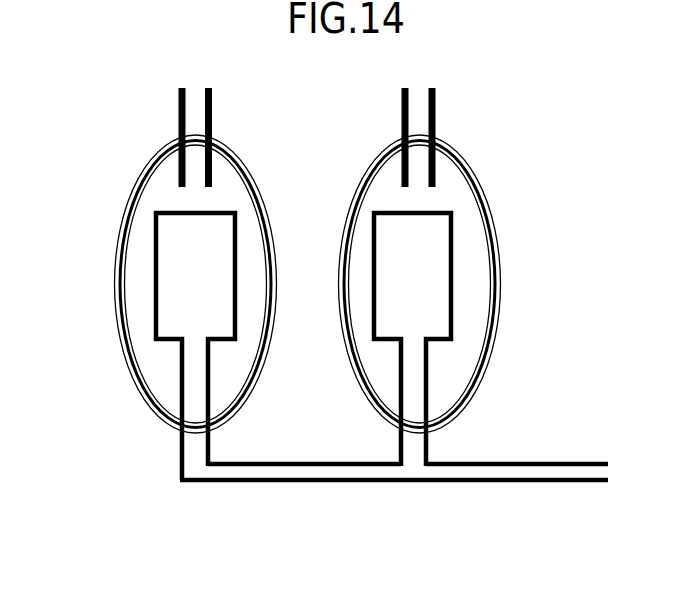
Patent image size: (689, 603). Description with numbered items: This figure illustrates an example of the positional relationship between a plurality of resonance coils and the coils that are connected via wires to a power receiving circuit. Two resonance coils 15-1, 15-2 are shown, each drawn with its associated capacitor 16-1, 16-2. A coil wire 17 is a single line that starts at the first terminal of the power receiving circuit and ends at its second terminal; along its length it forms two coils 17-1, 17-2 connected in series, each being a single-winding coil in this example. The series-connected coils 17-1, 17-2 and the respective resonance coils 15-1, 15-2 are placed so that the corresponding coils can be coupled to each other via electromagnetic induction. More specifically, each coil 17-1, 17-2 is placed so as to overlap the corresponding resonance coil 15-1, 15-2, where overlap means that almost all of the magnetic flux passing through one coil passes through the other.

The resonance coil 15-1 is at (255, 177).
The resonance coil 15-2 is at (479, 177).
The capacitor 16-1 is at (212, 112).
The capacitor 16-2 is at (436, 112).
The coil 17-1 is at (155, 322).
The coil 17-2 is at (373, 322).
The coil wire 17 is at (402, 492).